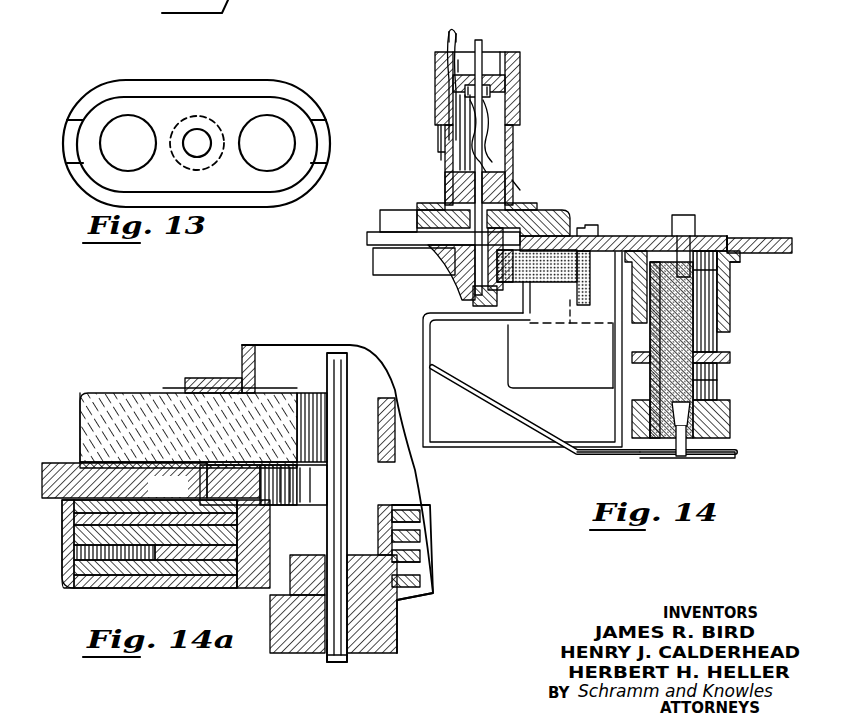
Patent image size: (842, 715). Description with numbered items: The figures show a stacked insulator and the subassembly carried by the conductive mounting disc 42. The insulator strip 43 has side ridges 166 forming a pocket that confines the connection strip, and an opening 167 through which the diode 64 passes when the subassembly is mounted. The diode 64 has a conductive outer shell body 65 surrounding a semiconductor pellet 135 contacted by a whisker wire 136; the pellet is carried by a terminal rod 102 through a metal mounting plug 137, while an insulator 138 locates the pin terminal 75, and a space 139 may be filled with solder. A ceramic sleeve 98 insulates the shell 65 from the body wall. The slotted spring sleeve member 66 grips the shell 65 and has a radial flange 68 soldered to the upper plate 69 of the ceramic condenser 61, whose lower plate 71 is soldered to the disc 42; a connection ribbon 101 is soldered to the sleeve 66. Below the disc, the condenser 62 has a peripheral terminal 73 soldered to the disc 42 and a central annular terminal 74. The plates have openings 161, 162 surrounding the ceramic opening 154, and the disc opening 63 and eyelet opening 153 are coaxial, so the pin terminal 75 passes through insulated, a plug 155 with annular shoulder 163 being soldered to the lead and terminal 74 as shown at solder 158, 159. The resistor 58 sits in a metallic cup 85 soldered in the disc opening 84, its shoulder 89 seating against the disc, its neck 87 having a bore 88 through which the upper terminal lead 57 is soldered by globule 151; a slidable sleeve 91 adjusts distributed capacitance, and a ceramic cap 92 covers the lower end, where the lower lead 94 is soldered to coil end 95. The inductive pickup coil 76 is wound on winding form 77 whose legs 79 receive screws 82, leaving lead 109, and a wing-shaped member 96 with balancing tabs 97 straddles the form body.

In FIG. 13, the insulator strip 43 is at (256, 80).
In FIG. 13, the side ridges 166 is at (184, 80).
In FIG. 13, the opening 167 is at (130, 160).
In FIG. 14, the diode 64 is at (437, 107).
In FIG. 14, the sleeve 98 is at (521, 83).
In FIG. 14, the semiconductor pellet 135 is at (500, 102).
In FIG. 14, the terminal rod 102 is at (492, 52).
In FIG. 14, the metal mounting plug 137 is at (465, 30).
In FIG. 14, the connection ribbon 101 is at (448, 38).
In FIG. 14, the space 139 is at (500, 55).
In FIG. 14, the outer shell body 65 is at (521, 55).
In FIG. 14, the whisker wire 136 is at (505, 135).
In FIG. 14, the sleeve member 66 is at (437, 117).
In FIG. 14A, the sleeve member 66 is at (242, 345).
In FIG. 14, the pin terminal 75 is at (505, 180).
In FIG. 14A, the pin terminal 75 is at (330, 353).
In FIG. 14, the insulator 138 is at (540, 195).
In FIG. 14, the radial flange 68 is at (428, 203).
In FIG. 14A, the radial flange 68 is at (195, 378).
In FIG. 14, the opening 63 is at (540, 212).
In FIG. 14A, the opening 63 is at (205, 484).
In FIG. 14, the screw 82 is at (600, 225).
In FIG. 14, the upper plate 69 is at (410, 192).
In FIG. 14A, the upper plate 69 is at (170, 388).
In FIG. 14, the condenser 61 is at (388, 210).
In FIG. 14A, the condenser 61 is at (103, 393).
In FIG. 14, the condenser 62 is at (373, 258).
In FIG. 14A, the condenser 62 is at (66, 590).
In FIG. 14, the mounting disc 42 is at (760, 238).
In FIG. 14A, the mounting disc 42 is at (50, 463).
In FIG. 14, the plug 155 is at (470, 295).
In FIG. 14A, the plug 155 is at (300, 658).
In FIG. 14, the lead 109 is at (440, 302).
In FIG. 14, the legs 79 is at (570, 325).
In FIG. 14, the balancing tabs 97 is at (525, 412).
In FIG. 14, the winding form 77 is at (566, 412).
In FIG. 14, the inductive pickup coil 76 is at (495, 450).
In FIG. 14, the wing-shaped member 96 is at (600, 460).
In FIG. 14, the coil end 95 is at (665, 458).
In FIG. 14, the upper terminal lead 57 is at (685, 218).
In FIG. 14, the solder globule 151 is at (678, 214).
In FIG. 14, the neck 87 is at (668, 225).
In FIG. 14, the bore 88 is at (697, 232).
In FIG. 14, the metallic cup 85 is at (715, 238).
In FIG. 14, the opening 84 is at (735, 240).
In FIG. 14, the shoulder 89 is at (745, 260).
In FIG. 14, the slidable sleeve 91 is at (731, 344).
In FIG. 14, the resistor 58 is at (718, 380).
In FIG. 14, the cap 92 is at (740, 420).
In FIG. 14, the lower lead 94 is at (688, 462).
In FIG. 14A, the opening 161 is at (300, 345).
In FIG. 14A, the opening 162 is at (248, 476).
In FIG. 14A, the lower plate 71 is at (74, 462).
In FIG. 14A, the opening 154 is at (390, 445).
In FIG. 14A, the opening 153 is at (400, 490).
In FIG. 14A, the peripheral terminal 73 is at (100, 588).
In FIG. 14A, the central annular terminal 74 is at (240, 590).
In FIG. 14A, the annular shoulder 163 is at (305, 590).
In FIG. 14A, the solder 159 is at (405, 605).
In FIG. 14A, the solder 158 is at (350, 662).